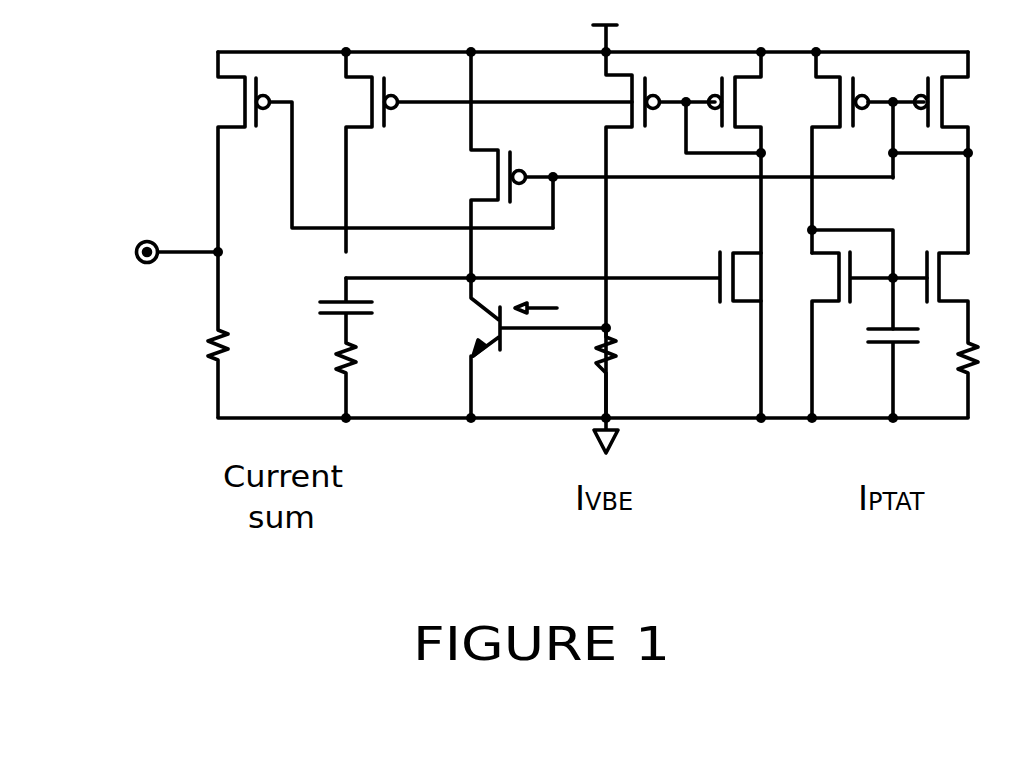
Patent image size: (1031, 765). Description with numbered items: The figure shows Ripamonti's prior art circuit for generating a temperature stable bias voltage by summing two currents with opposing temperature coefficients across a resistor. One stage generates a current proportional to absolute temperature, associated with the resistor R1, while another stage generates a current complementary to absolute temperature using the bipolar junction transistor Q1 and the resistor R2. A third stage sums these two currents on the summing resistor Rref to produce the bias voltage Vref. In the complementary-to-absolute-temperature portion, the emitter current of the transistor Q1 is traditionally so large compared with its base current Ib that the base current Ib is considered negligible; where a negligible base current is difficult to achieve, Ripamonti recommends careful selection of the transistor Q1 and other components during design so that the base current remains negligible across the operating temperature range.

The bias voltage output Vref is at (168, 277).
The summing resistor Rref is at (260, 335).
The bipolar junction transistor Q1 is at (449, 328).
The base current Ib is at (561, 298).
The resistor R2 is at (577, 373).
The resistor R1 is at (945, 380).